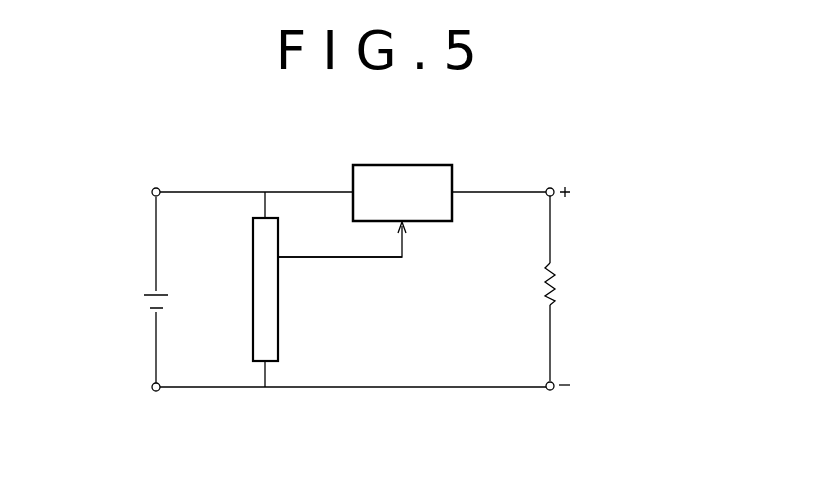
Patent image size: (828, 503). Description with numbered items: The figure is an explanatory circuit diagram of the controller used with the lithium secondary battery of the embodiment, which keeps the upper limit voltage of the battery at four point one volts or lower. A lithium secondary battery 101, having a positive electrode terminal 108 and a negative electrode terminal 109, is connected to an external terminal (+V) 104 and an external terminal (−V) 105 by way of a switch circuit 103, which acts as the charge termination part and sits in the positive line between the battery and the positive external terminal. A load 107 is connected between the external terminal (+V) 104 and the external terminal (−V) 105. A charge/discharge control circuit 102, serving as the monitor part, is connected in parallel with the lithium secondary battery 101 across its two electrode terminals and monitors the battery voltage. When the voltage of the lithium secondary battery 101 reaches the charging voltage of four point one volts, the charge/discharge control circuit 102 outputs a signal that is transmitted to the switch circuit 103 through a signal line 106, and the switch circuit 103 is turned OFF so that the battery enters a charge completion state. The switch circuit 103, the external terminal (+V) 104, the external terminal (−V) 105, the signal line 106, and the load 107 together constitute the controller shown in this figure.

The lithium secondary battery 101 is at (144, 299).
The charge/discharge control circuit 102 is at (253, 238).
The switch circuit 103 is at (400, 176).
The external terminal (+V) 104 is at (552, 186).
The external terminal (−V) 105 is at (553, 391).
The signal line 106 is at (330, 259).
The load 107 is at (543, 288).
The positive electrode terminal 108 is at (158, 188).
The negative electrode terminal 109 is at (159, 391).